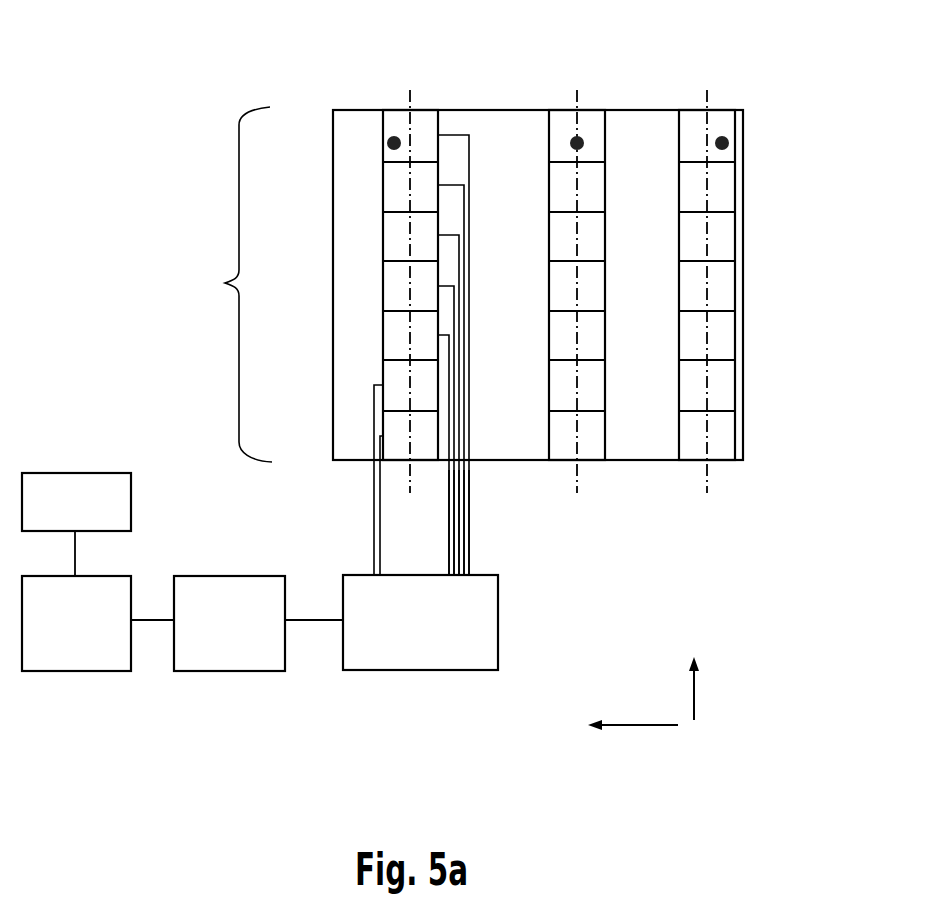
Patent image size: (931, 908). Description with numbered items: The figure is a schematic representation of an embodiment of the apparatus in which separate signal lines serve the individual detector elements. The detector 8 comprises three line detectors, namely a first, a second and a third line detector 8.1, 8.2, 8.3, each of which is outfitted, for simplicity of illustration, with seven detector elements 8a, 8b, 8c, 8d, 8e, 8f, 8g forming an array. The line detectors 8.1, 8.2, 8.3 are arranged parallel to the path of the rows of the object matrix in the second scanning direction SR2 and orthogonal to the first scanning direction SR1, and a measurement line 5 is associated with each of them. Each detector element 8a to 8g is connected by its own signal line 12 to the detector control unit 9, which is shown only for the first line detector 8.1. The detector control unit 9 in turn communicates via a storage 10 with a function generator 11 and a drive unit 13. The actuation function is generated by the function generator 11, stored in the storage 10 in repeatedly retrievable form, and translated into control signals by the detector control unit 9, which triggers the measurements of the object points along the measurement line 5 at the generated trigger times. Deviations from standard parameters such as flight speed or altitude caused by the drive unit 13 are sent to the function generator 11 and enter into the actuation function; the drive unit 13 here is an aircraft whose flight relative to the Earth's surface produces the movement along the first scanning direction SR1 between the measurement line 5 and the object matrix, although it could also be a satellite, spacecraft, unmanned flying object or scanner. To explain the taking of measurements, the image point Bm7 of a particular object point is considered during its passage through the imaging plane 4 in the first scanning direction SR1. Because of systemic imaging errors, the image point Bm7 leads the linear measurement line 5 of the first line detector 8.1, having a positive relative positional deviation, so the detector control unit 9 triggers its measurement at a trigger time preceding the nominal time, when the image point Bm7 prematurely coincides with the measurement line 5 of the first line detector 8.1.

The imaging plane 4 is at (740, 228).
The measurement line 5 is at (408, 122).
The detector 8 is at (239, 284).
The first line detector 8.1 is at (398, 118).
The second line detector 8.2 is at (558, 118).
The third line detector 8.3 is at (722, 118).
The detector element 8a is at (390, 446).
The detector element 8b is at (390, 378).
The detector element 8c is at (390, 333).
The detector element 8d is at (390, 286).
The detector element 8e is at (390, 237).
The detector element 8f is at (390, 188).
The detector element 8g is at (390, 138).
The detector control unit 9 is at (415, 657).
The storage 10 is at (205, 657).
The function generator 11 is at (75, 657).
The signal line 12 is at (470, 512).
The drive unit 13 is at (68, 485).
The image point Bm7 is at (770, 133).
The first scanning direction SR1 is at (630, 727).
The second scanning direction SR2 is at (697, 695).